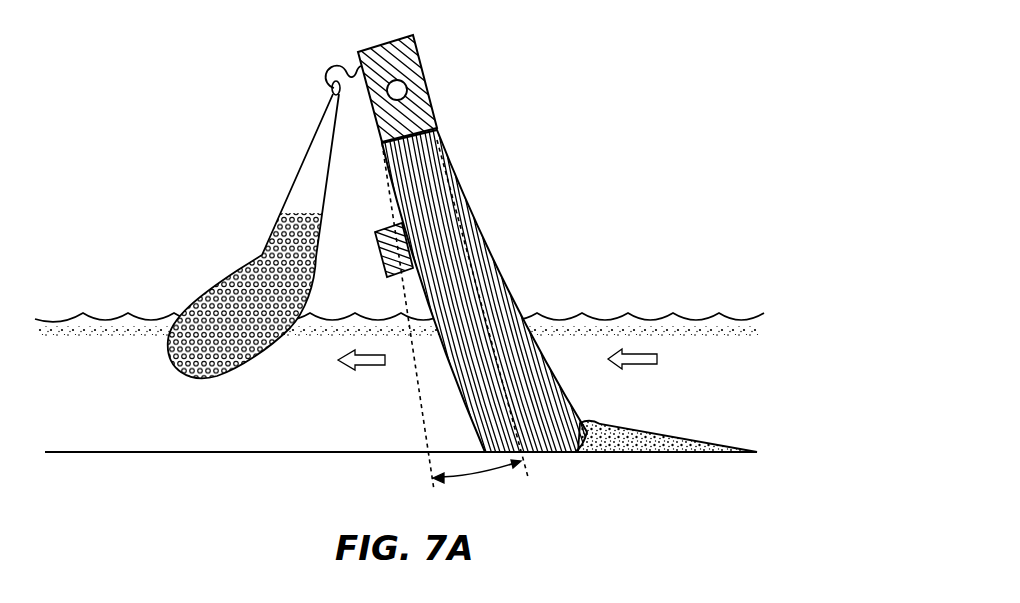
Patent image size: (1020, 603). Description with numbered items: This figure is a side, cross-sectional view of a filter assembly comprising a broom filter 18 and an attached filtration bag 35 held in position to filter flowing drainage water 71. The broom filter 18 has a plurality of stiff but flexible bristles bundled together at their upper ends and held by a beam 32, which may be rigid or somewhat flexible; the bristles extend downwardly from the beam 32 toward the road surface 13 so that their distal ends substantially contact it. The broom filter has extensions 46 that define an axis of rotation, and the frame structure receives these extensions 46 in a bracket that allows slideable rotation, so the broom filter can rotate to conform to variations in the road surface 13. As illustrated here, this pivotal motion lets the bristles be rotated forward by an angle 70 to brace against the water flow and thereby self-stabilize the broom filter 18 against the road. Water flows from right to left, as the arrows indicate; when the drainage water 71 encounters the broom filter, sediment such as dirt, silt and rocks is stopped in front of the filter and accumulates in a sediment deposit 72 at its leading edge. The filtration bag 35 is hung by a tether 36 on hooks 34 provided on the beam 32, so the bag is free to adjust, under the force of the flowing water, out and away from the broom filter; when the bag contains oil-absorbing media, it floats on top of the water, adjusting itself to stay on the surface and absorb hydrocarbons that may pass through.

The bottom surface / seabed 13 is at (168, 452).
The flap / deflector body 18 is at (470, 145).
The beam 32 is at (387, 44).
The hooks 34 is at (328, 63).
The filtration bag 35 is at (240, 270).
The tether line 36 is at (330, 105).
The extensions 46 is at (405, 90).
The angle 70 is at (473, 476).
The drainage water 71 is at (675, 318).
The sediment deposit 72 is at (660, 440).